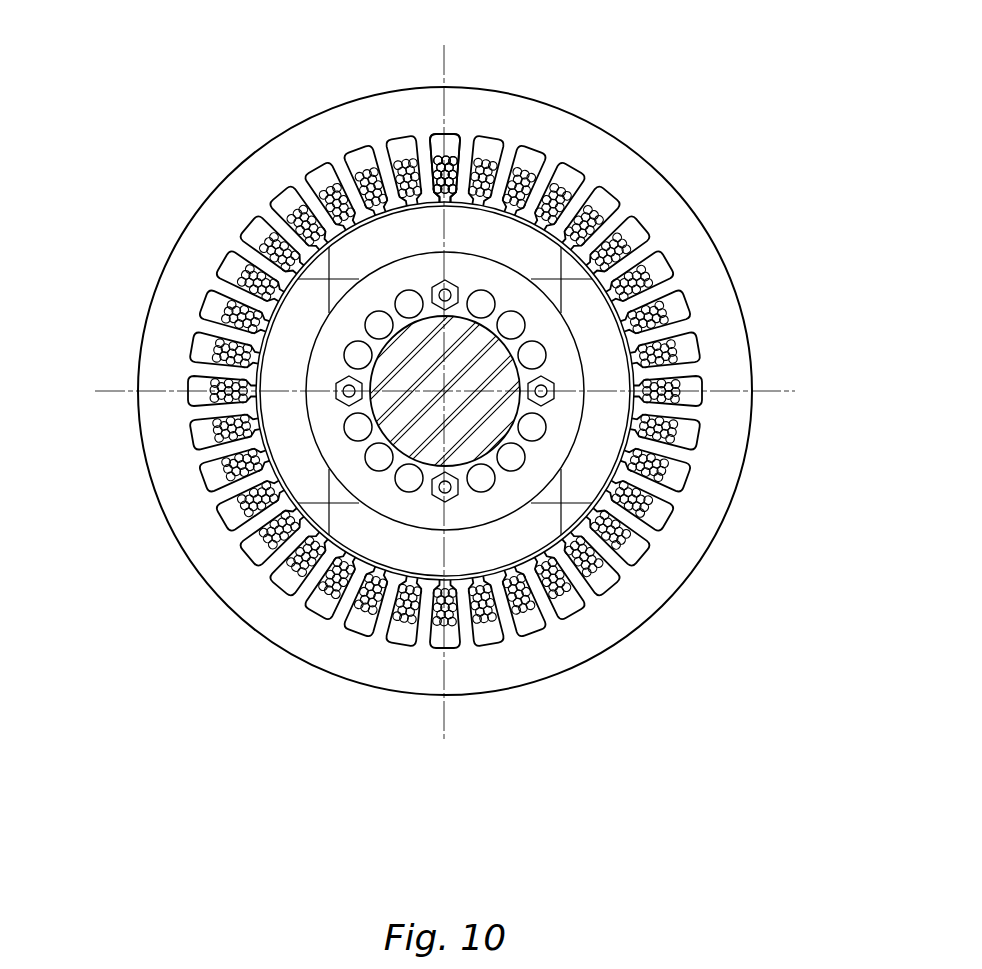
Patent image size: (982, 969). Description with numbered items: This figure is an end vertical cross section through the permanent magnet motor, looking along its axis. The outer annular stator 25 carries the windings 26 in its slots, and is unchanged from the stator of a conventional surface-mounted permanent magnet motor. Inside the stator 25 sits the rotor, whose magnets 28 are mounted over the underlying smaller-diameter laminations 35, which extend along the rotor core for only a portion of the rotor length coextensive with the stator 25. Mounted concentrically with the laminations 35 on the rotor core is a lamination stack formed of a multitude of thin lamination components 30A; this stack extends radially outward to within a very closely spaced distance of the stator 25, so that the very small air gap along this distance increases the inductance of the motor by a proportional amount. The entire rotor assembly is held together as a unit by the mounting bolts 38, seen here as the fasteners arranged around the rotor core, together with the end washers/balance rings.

The stator 25 is at (266, 162).
The windings 26 is at (293, 220).
The magnets 28 is at (519, 240).
The thin lamination components 30A is at (288, 468).
The laminations 35 is at (380, 295).
The mounting bolts 38 is at (452, 284).